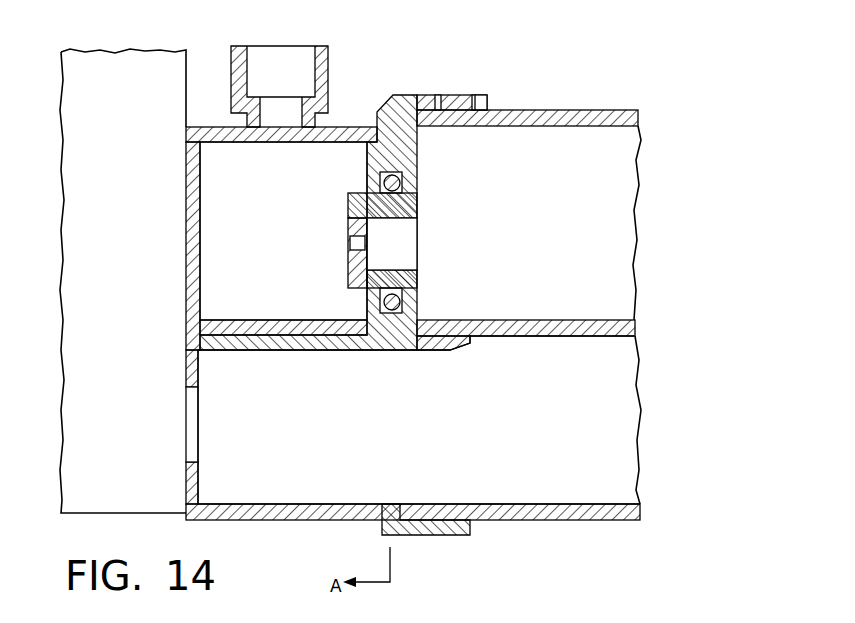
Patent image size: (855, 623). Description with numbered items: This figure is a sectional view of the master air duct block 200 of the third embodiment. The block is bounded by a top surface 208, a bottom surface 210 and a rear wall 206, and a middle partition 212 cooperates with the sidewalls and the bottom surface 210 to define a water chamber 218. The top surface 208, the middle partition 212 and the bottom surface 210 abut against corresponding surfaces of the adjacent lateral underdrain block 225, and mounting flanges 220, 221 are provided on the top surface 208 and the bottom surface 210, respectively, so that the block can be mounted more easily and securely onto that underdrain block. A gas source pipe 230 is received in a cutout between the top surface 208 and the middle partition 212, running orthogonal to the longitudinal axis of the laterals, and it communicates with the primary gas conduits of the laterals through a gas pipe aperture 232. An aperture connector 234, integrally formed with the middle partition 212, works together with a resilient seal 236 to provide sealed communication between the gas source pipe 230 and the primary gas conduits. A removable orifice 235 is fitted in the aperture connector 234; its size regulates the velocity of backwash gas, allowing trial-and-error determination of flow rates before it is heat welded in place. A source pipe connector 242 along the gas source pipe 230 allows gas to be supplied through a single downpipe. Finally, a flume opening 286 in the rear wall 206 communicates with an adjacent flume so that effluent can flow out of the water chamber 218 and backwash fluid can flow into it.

The air duct block 200 is at (374, 287).
The source pipe connector 242 is at (325, 62).
The top surface 208 is at (344, 110).
The mounting flange 220 is at (484, 96).
The lateral underdrain block 225 is at (598, 110).
The gas source pipe 230 is at (227, 143).
The resilient seal 236 is at (397, 180).
The removable orifice 235 is at (349, 219).
The aperture connector 234 is at (410, 210).
The gas pipe aperture 232 is at (357, 292).
The rear wall 206 is at (199, 367).
The middle partition 212 is at (403, 351).
The flume opening 286 is at (193, 428).
The water chamber 218 is at (361, 447).
The bottom surface 210 is at (306, 505).
The mounting flange 221 is at (437, 536).